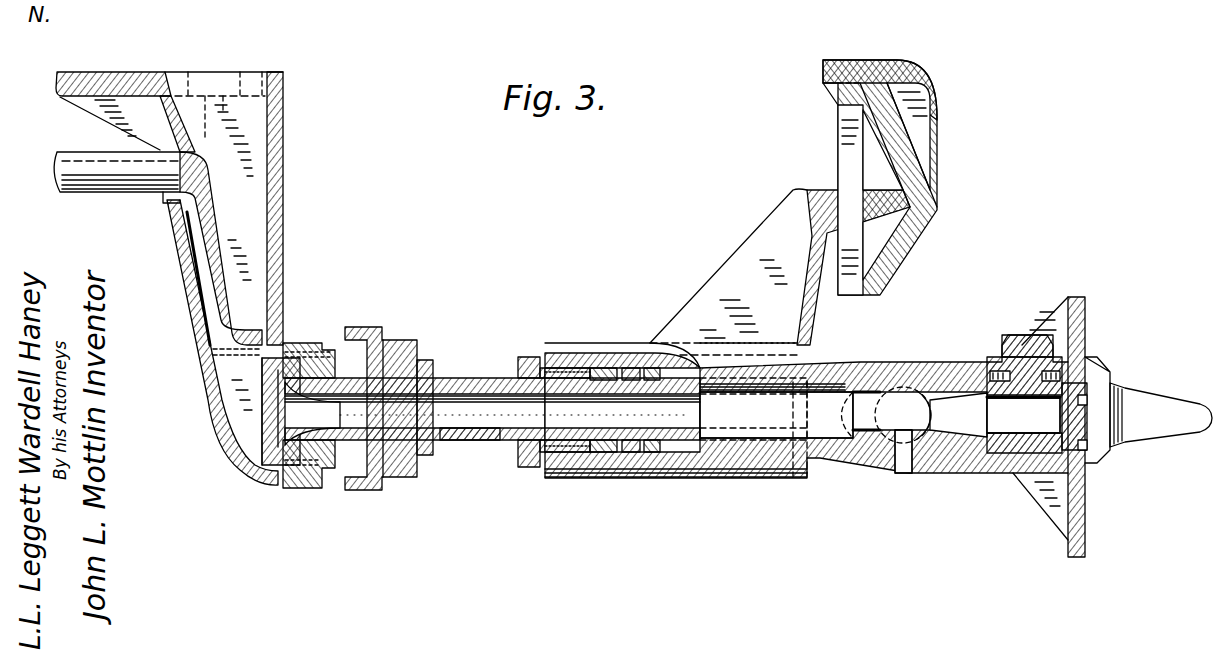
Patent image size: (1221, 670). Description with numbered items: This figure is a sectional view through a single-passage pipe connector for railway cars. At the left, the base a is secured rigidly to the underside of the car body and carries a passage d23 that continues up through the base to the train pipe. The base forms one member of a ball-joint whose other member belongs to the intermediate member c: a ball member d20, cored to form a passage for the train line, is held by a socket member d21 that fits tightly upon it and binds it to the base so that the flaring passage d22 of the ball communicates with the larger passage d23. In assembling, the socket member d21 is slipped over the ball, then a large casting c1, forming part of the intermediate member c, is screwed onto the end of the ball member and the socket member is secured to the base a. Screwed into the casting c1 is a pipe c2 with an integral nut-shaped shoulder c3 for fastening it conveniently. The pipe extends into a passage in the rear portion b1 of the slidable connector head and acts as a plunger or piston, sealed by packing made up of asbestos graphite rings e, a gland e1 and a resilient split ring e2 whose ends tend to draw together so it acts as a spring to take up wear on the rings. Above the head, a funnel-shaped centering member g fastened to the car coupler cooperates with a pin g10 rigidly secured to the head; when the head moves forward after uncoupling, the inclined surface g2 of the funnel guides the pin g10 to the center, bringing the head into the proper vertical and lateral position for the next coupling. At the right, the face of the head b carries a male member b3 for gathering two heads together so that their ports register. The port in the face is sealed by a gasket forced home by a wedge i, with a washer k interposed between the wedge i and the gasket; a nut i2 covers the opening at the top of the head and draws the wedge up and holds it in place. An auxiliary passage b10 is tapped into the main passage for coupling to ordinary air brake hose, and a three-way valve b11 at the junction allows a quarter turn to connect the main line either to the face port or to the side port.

The base a is at (283, 172).
The head b is at (1087, 522).
The rear portion of the connector head b1 is at (770, 447).
The male member b3 is at (1161, 415).
The auxiliary passage b10 is at (910, 465).
The three-way valve b11 is at (898, 388).
The intermediate member c is at (546, 414).
The casting c1 is at (367, 357).
The pipe c2 is at (473, 441).
The shoulder c3 is at (417, 458).
The ball member d20 is at (320, 442).
The socket member d21 is at (310, 345).
The flaring passage d22 is at (287, 414).
The passage in the base d23 is at (268, 437).
The packing rings e is at (656, 452).
The gland e1 is at (528, 467).
The resilient split ring e2 is at (593, 452).
The centering member g is at (937, 215).
The inclined surface g2 is at (893, 237).
The pin g10 is at (807, 193).
The wedge i is at (1023, 415).
The nut i2 is at (1023, 348).
The washer k is at (1082, 362).